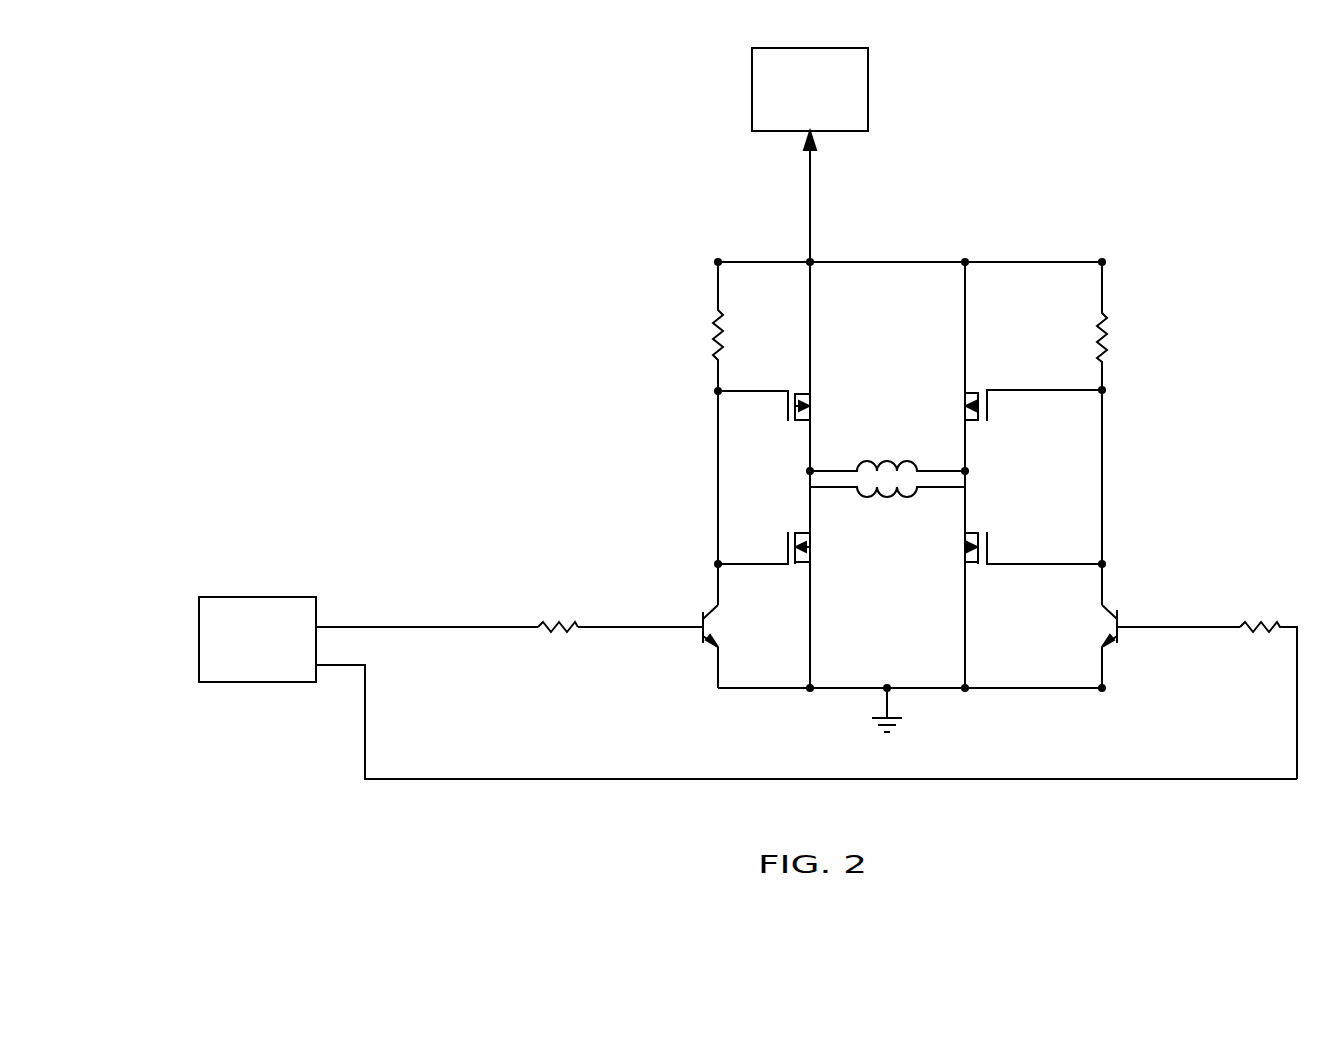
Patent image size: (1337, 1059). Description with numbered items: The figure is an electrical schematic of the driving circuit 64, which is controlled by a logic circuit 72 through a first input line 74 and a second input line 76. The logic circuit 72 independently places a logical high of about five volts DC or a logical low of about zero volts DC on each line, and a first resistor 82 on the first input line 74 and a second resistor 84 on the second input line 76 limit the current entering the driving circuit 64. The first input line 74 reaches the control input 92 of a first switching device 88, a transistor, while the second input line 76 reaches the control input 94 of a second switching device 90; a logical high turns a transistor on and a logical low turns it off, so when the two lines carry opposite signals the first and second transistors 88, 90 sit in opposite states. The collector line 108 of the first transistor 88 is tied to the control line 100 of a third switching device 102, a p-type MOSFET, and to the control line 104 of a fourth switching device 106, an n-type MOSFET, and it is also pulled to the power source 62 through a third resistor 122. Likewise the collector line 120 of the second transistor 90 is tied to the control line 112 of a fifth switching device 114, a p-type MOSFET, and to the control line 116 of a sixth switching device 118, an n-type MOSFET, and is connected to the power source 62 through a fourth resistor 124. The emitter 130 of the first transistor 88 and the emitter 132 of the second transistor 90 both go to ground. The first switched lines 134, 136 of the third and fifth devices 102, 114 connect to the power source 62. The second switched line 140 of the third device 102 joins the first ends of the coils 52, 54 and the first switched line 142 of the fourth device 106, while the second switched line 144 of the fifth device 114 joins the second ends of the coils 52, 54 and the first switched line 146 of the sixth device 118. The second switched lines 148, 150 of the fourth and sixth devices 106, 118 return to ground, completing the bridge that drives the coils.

The coil 52 is at (900, 470).
The coil 54 is at (902, 488).
The power source 62 is at (790, 48).
The driving circuit 64 is at (1140, 172).
The logic circuit 72 is at (240, 597).
The first input line 74 is at (608, 624).
The second input line 76 is at (600, 779).
The first resistor 82 is at (542, 630).
The second resistor 84 is at (1288, 625).
The first switching device 88 is at (705, 622).
The second switching device 90 is at (1112, 627).
The control input 92 is at (704, 634).
The control input 94 is at (1120, 636).
The control line 100 is at (740, 391).
The third switching device 102 is at (806, 404).
The control line 104 is at (738, 564).
The fourth switching device 106 is at (811, 548).
The collector line 108 is at (718, 520).
The control line 112 is at (1030, 390).
The fifth switching device 114 is at (970, 402).
The control line 116 is at (1053, 563).
The sixth switching device 118 is at (968, 534).
The collector line 120 is at (1104, 592).
The third resistor 122 is at (716, 325).
The fourth resistor 124 is at (1106, 322).
The emitter 130 is at (718, 678).
The emitter 132 is at (1102, 676).
The first switched line 134 is at (812, 312).
The first switched line 136 is at (966, 292).
The second switched line 140 is at (810, 452).
The first switched line 142 is at (810, 505).
The second switched line 144 is at (966, 450).
The first switched line 146 is at (966, 522).
The second switched line 148 is at (810, 670).
The second switched line 150 is at (966, 672).